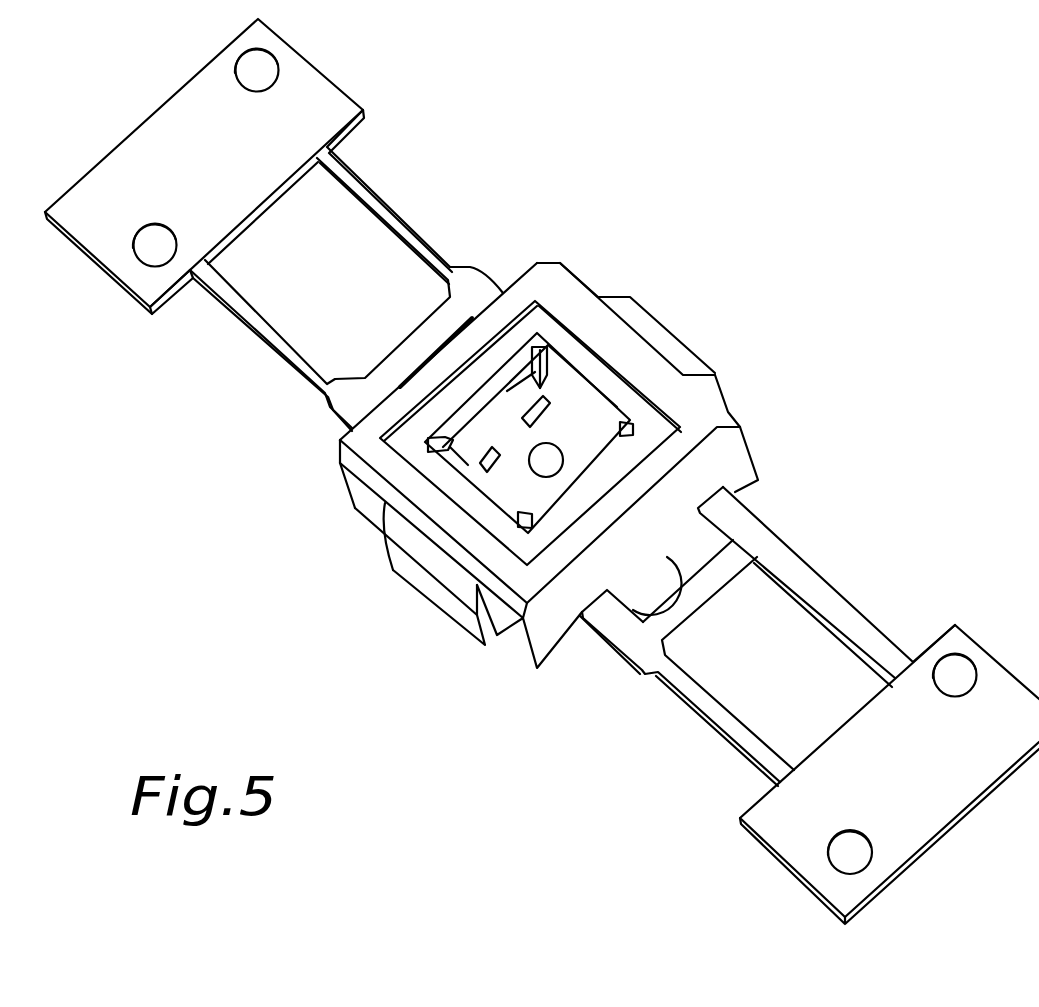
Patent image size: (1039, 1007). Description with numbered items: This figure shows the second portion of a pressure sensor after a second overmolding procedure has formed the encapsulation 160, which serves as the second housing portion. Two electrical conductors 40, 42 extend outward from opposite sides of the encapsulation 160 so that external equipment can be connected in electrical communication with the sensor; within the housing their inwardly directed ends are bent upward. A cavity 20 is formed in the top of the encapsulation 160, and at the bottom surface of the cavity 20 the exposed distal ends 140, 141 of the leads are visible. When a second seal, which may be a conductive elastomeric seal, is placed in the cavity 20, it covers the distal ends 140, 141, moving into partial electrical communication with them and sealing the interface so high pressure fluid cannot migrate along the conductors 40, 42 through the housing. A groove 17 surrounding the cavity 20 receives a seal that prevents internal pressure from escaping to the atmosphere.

The electrical conductor 40 is at (407, 228).
The electrical conductor 42 is at (867, 632).
The groove 17 is at (702, 423).
The encapsulation 160 is at (740, 461).
The cavity 20 is at (542, 372).
The exposed distal end 140 is at (547, 413).
The exposed distal end 141 is at (480, 465).